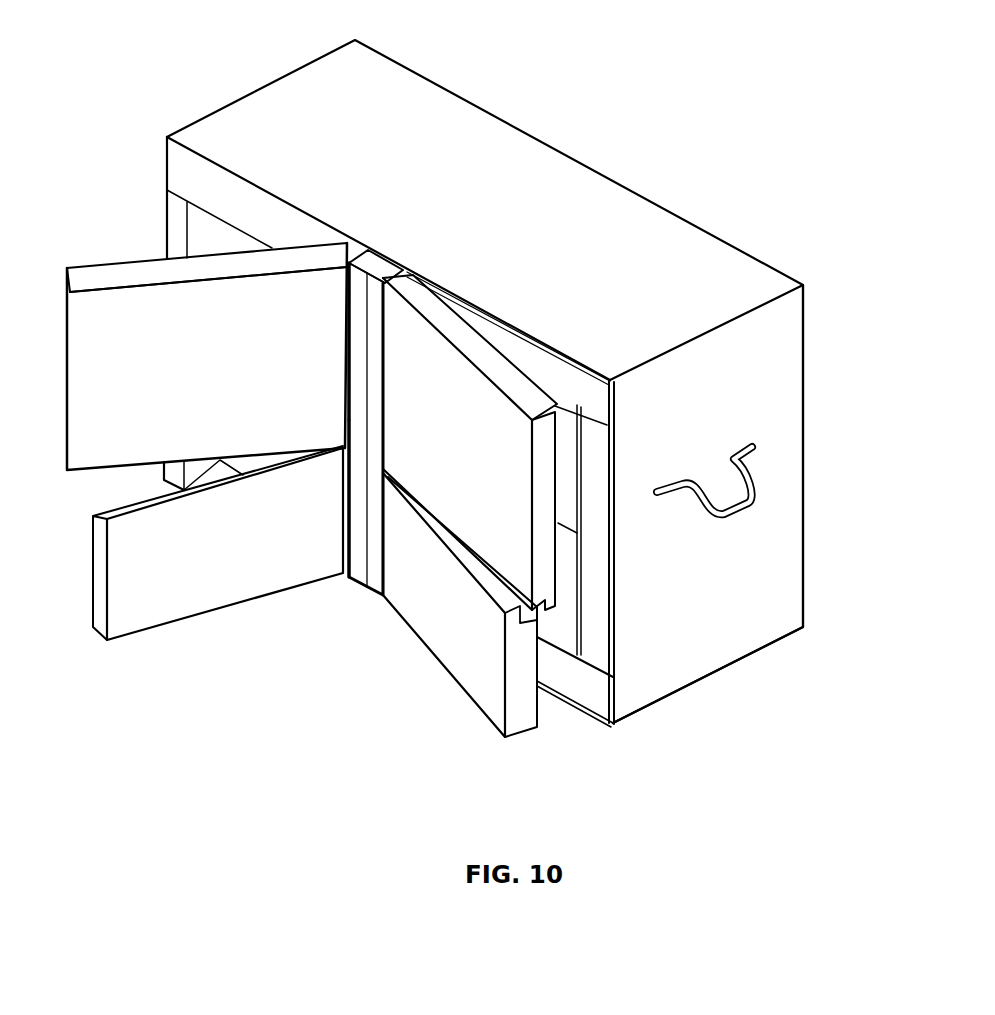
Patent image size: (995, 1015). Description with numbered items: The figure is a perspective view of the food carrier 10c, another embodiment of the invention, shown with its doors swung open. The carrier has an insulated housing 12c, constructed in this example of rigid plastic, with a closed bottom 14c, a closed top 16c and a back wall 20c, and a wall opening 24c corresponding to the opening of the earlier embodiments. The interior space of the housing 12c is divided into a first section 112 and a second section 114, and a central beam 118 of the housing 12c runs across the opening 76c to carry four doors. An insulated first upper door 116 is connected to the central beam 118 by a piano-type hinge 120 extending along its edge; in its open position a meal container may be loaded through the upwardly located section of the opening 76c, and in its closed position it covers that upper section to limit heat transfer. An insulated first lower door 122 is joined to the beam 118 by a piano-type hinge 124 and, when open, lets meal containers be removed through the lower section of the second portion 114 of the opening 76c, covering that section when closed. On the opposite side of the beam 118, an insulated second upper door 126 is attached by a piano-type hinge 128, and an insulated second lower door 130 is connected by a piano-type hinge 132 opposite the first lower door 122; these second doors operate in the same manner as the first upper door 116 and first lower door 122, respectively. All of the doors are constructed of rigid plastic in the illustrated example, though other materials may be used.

The food carrier 10c is at (752, 65).
The housing 12c is at (684, 207).
The bottom 14c is at (690, 687).
The top 16c is at (736, 264).
The back wall 20c is at (805, 532).
The opening 24c is at (785, 441).
The opening 76c is at (562, 637).
The first section 112 is at (570, 460).
The second section 114 is at (200, 234).
The first upper door 116 is at (537, 403).
The central beam 118 is at (370, 260).
The piano-type hinge 120 is at (384, 384).
The first lower door 122 is at (448, 662).
The piano-type hinge 124 is at (358, 588).
The second upper door 126 is at (80, 276).
The piano-type hinge 128 is at (347, 290).
The second lower door 130 is at (143, 618).
The piano-type hinge 132 is at (346, 533).